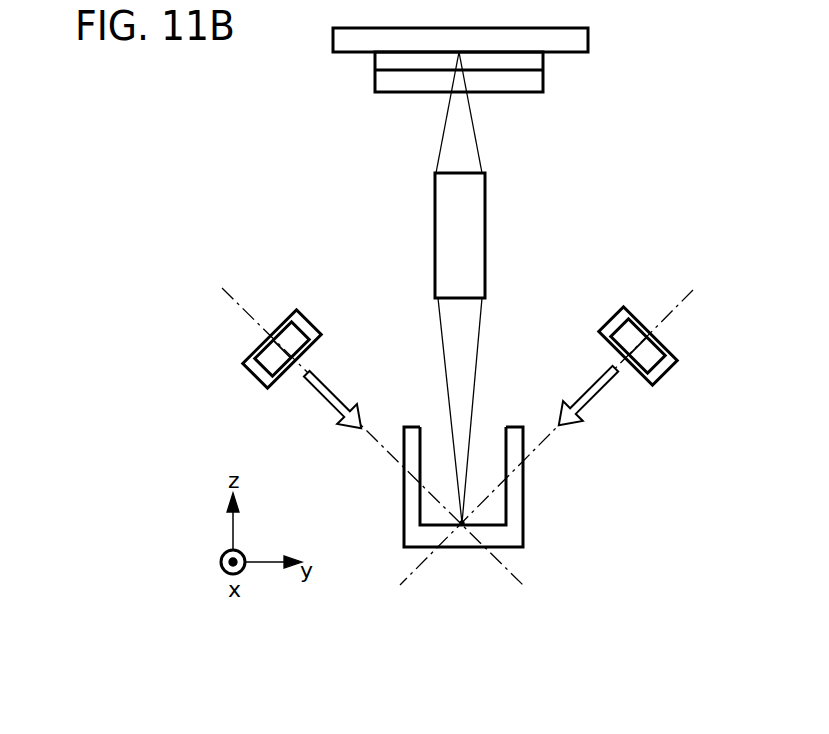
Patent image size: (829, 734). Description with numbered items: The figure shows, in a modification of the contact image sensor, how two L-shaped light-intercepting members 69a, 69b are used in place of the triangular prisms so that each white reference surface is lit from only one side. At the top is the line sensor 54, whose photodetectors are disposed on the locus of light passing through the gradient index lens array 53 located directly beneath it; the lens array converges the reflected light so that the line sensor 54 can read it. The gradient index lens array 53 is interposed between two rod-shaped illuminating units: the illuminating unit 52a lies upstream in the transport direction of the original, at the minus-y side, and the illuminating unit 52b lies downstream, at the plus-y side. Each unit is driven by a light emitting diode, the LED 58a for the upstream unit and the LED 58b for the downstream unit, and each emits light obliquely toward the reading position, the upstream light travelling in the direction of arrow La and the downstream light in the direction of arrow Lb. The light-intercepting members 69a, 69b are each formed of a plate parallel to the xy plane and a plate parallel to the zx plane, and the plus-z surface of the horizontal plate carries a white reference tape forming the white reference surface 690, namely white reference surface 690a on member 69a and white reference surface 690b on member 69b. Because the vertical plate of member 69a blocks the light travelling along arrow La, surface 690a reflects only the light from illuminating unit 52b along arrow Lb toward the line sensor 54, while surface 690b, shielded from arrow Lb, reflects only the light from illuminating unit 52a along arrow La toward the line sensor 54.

The line sensor 54 is at (342, 53).
The gradient index lens array 53 is at (486, 235).
The illuminating unit 52a is at (303, 325).
The light emitting diode 58a is at (245, 360).
The illuminating unit 52b is at (630, 313).
The light emitting diode 58b is at (678, 350).
The arrow La is at (327, 402).
The arrow Lb is at (603, 393).
The light-intercepting member 69a is at (372, 509).
The light-intercepting member 69b is at (562, 512).
The white reference surface 690 is at (462, 523).
The white reference surface 690a is at (505, 574).
The white reference surface 690b is at (534, 574).